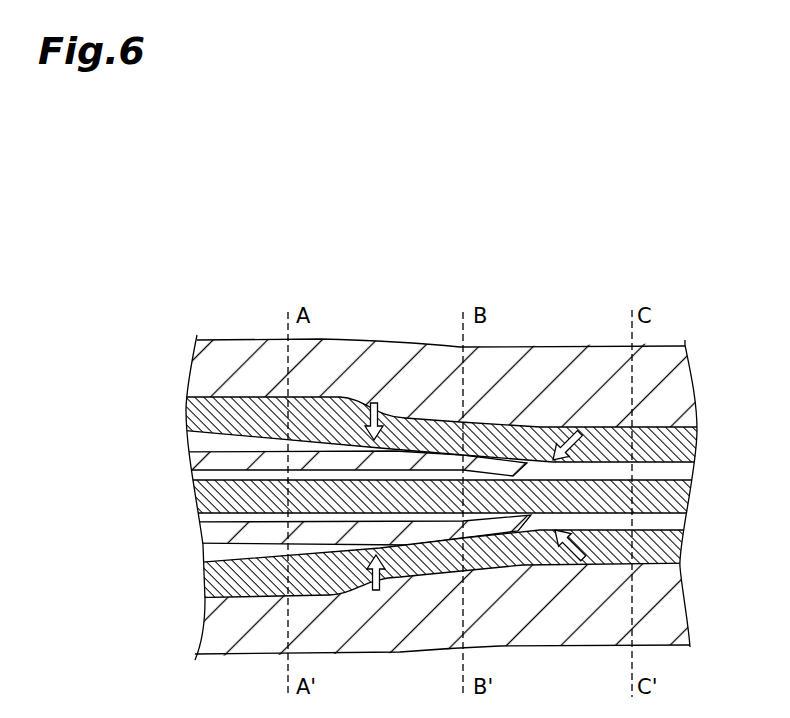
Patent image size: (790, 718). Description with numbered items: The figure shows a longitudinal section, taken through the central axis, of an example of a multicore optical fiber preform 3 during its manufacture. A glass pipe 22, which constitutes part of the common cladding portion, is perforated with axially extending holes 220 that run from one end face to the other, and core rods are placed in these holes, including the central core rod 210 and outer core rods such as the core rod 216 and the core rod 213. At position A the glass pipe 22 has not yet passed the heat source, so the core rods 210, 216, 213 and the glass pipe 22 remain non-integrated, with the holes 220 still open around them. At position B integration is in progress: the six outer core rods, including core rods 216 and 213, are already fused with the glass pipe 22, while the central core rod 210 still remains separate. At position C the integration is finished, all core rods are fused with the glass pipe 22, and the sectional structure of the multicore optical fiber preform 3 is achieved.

The multicore optical fiber preform 3 is at (550, 272).
The glass pipe 22 is at (200, 376).
The core rod 216 is at (200, 422).
The core rod 210 is at (205, 502).
The core rod 213 is at (213, 585).
The hole 220 is at (263, 398).